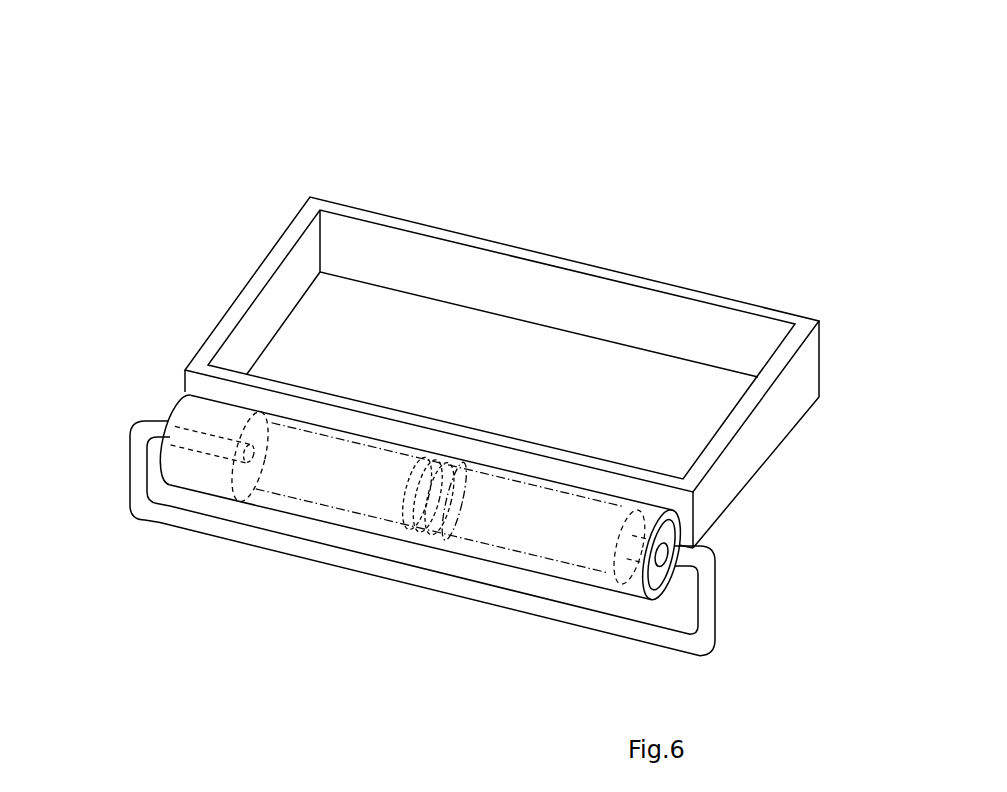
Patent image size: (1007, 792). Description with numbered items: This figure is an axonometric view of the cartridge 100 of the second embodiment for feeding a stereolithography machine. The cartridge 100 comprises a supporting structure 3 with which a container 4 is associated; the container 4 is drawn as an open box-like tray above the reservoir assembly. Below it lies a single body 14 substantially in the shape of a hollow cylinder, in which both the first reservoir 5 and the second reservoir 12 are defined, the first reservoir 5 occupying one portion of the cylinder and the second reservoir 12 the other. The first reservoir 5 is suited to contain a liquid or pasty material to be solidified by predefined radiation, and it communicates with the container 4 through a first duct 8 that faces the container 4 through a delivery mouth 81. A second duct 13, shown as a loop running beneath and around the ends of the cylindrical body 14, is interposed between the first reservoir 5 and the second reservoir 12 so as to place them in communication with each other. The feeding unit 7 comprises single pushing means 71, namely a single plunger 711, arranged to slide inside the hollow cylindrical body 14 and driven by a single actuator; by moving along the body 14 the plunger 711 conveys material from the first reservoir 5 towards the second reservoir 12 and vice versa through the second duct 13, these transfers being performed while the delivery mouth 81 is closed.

The cartridge 100 is at (297, 148).
The supporting structure 3 is at (758, 508).
The container 4 is at (528, 280).
The first reservoir 5 is at (312, 478).
The second reservoir 12 is at (583, 552).
The first duct 8 is at (268, 420).
The delivery mouth 81 is at (268, 410).
The feeding unit 7 is at (433, 551).
The pushing means 71 is at (418, 533).
The plunger 711 is at (452, 510).
The second duct 13 is at (358, 562).
The hollow cylindrical body 14 is at (167, 400).